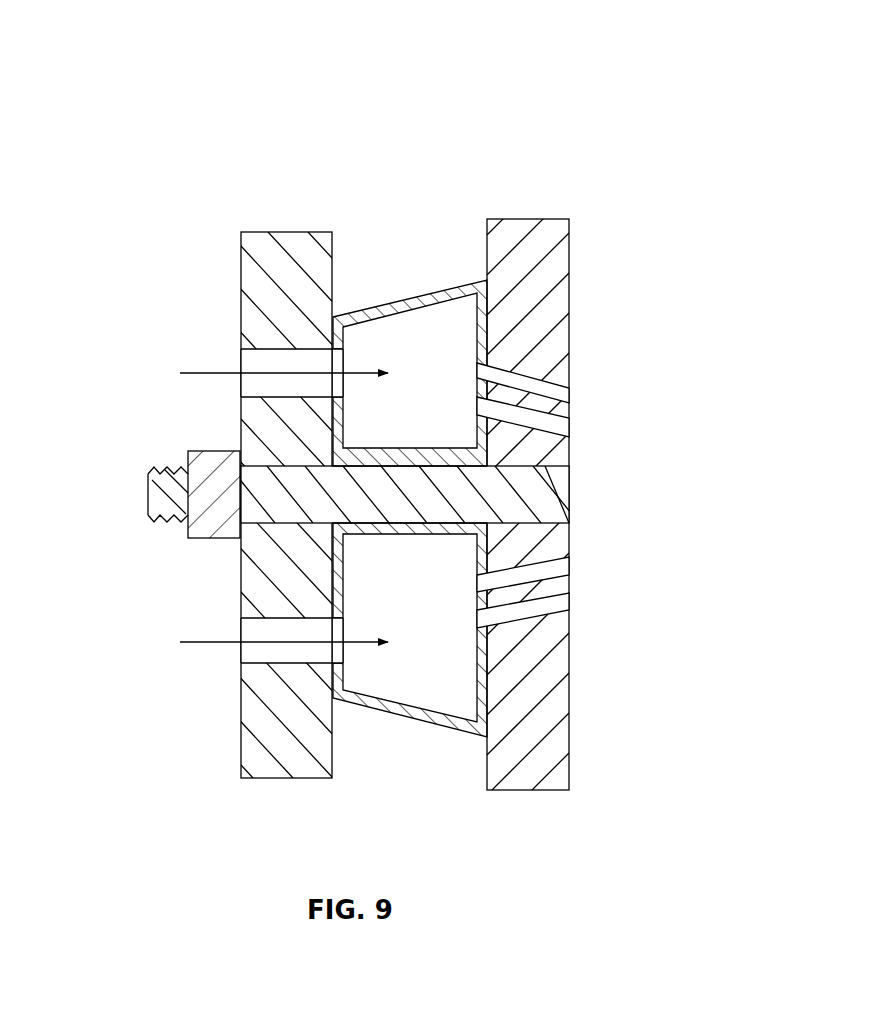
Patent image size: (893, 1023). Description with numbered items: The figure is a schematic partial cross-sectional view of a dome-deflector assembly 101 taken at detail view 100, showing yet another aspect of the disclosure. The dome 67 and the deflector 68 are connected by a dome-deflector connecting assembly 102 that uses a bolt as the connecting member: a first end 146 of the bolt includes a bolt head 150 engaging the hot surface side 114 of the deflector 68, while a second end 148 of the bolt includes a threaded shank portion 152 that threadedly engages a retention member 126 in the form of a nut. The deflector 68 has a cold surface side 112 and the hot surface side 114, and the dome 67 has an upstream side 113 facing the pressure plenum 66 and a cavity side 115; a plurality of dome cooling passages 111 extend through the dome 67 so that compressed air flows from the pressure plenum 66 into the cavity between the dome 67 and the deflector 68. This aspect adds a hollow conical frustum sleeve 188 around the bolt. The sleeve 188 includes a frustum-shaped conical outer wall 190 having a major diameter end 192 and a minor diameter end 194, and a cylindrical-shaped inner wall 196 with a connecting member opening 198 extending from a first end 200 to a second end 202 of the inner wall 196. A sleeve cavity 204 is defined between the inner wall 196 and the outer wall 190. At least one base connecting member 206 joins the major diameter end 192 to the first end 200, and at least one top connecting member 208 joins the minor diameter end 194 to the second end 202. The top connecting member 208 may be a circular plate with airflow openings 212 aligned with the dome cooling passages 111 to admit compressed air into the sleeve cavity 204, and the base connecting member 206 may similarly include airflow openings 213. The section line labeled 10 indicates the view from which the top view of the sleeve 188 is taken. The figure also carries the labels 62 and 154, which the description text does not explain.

The detail view 100 is at (406, 457).
The dome-deflector assembly 101 is at (406, 482).
The dome-deflector connecting assembly 102 is at (406, 500).
The view 10- 10 is at (378, 492).
The second side 62 is at (603, 514).
The pressure plenum 66 is at (406, 505).
The dome 67 is at (406, 484).
The deflector 68 is at (578, 514).
The dome cooling passages 111 is at (406, 505).
The cold surface side 112 is at (578, 514).
The upstream side 113 is at (406, 484).
The hot surface side 114 is at (578, 514).
The cavity side 115 is at (406, 484).
The retention member 126 is at (173, 524).
The first end 146 is at (438, 513).
The second end 148 is at (130, 454).
The bolt head 150 is at (438, 513).
The threaded shank portion 152 is at (152, 454).
The slots 154 is at (423, 496).
The hollow conical frustum sleeve 188 is at (410, 349).
The frustum-shaped conical outer wall 190 is at (333, 675).
The major diameter end 192 is at (333, 675).
The minor diameter end 194 is at (333, 675).
The cylindrical-shaped inner wall 196 is at (333, 630).
The connecting member opening 198 is at (410, 373).
The first end 200 is at (438, 513).
The second end 202 is at (333, 630).
The sleeve cavity 204 is at (410, 361).
The base connecting member 206 is at (333, 530).
The top connecting member 208 is at (333, 530).
The airflow openings 212 is at (333, 630).
The airflow openings 213 is at (412, 496).